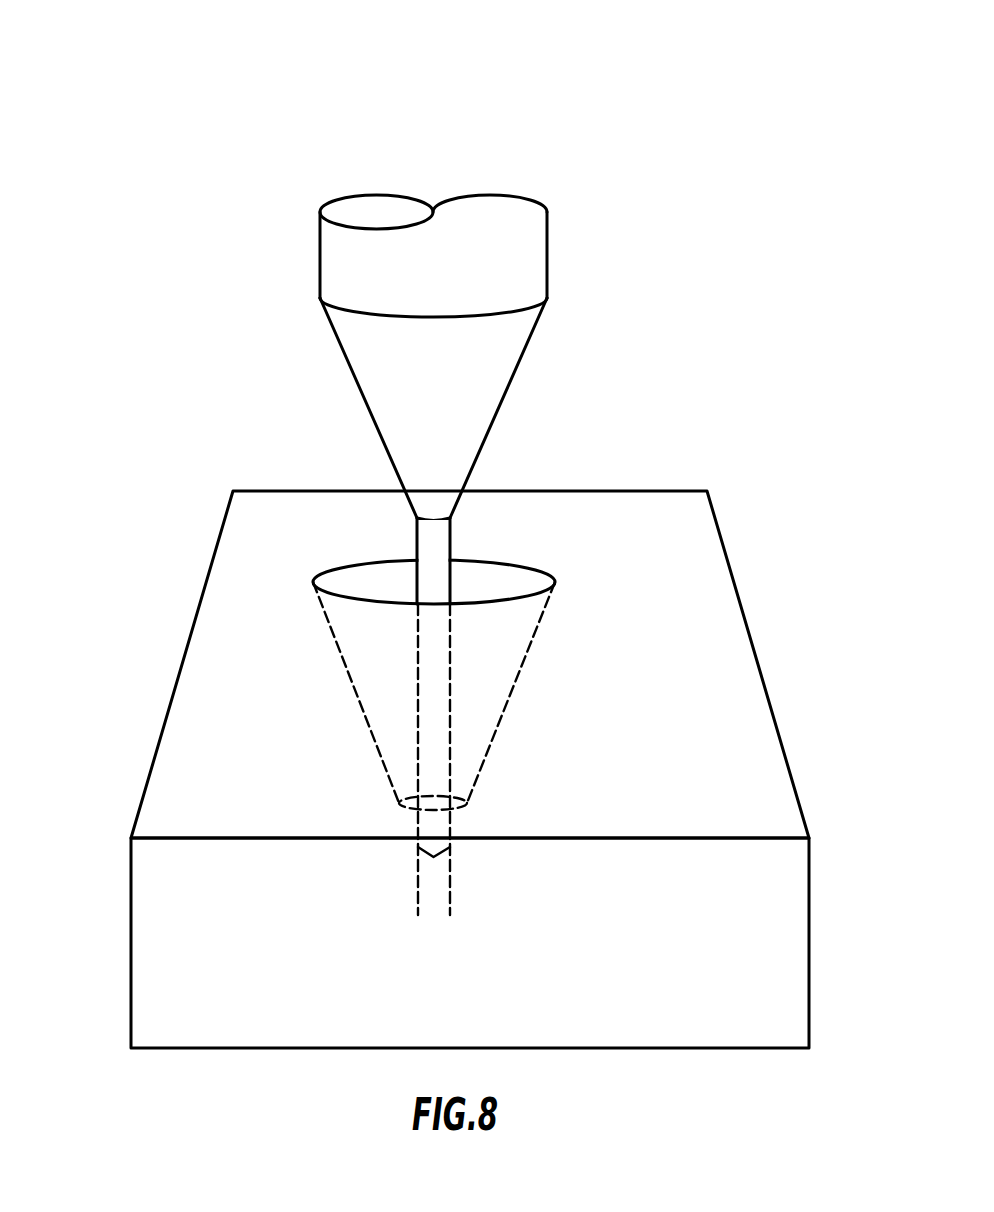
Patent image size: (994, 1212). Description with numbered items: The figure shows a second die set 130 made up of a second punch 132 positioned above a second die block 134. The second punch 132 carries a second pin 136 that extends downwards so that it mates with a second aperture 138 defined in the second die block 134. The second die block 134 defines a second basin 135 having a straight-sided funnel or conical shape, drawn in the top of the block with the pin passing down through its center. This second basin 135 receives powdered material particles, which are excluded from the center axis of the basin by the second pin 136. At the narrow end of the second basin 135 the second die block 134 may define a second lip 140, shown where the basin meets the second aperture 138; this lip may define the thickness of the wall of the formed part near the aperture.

The second die set 130 is at (623, 155).
The second punch 132 is at (547, 252).
The second die block 134 is at (745, 618).
The second basin 135 is at (313, 578).
The second pin 136 is at (451, 543).
The second aperture 138 is at (450, 882).
The second lip 140 is at (458, 808).